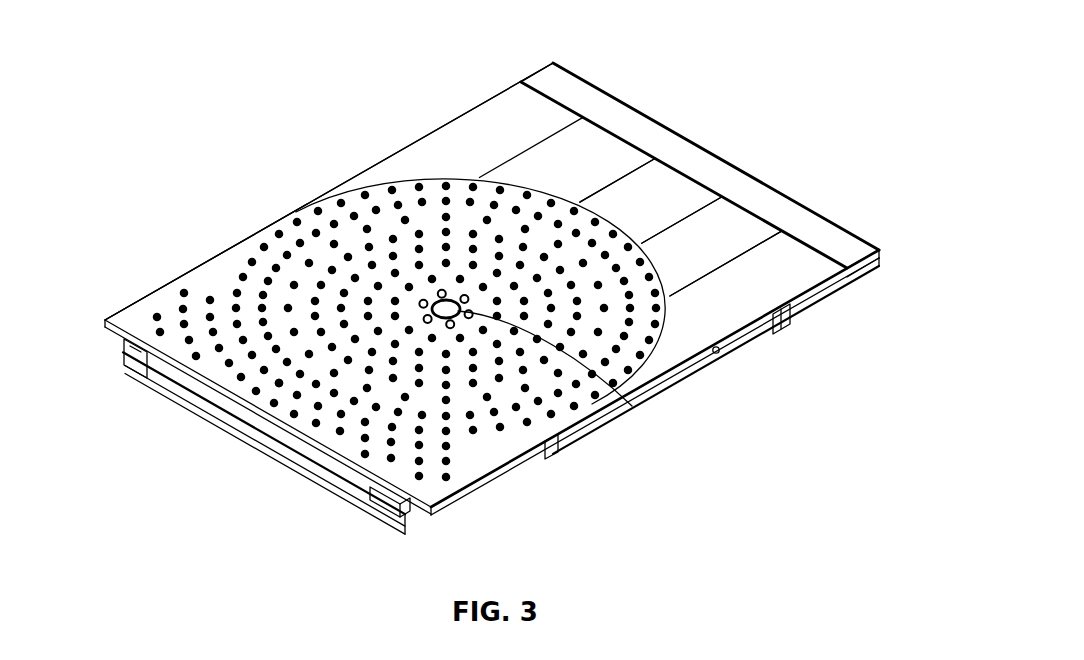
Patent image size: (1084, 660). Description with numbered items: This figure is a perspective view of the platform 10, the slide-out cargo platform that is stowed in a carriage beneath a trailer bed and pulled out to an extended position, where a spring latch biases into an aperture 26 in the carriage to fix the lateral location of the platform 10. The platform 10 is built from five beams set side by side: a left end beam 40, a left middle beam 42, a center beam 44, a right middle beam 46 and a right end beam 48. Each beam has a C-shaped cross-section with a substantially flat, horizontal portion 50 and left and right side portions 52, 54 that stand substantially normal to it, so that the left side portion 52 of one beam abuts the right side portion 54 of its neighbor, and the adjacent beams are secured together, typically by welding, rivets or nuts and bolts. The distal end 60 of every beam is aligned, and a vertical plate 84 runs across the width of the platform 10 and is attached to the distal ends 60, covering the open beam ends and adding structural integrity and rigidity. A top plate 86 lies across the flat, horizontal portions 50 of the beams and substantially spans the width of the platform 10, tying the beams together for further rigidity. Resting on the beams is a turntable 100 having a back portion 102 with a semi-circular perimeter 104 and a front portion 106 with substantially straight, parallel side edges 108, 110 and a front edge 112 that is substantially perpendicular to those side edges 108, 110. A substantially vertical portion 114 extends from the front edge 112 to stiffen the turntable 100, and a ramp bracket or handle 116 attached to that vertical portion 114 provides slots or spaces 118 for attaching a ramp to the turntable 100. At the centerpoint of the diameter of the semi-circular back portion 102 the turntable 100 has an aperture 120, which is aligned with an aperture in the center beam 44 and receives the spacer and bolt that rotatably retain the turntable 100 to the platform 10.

The platform 10 is at (880, 173).
The aperture 26 is at (745, 358).
The left end beam 40 is at (507, 107).
The left middle beam 42 is at (590, 153).
The center beam 44 is at (643, 192).
The right middle beam 46 is at (683, 220).
The right end beam 48 is at (867, 274).
The substantially flat, horizontal portion 50 is at (723, 350).
The left side portion 52 is at (440, 127).
The right side portion 54 is at (789, 316).
The distal end 60 is at (843, 221).
The vertical plate 84 is at (583, 98).
The top plate 86 is at (843, 247).
The turntable 100 is at (480, 468).
The back portion 102 is at (330, 220).
The semi-circular perimeter 104 is at (587, 427).
The front portion 106 is at (275, 388).
The side edge 108 is at (193, 273).
The side edge 110 is at (527, 453).
The front edge 112 is at (108, 340).
The substantially vertical portion 114 is at (400, 500).
The ramp bracket or handle 116 is at (173, 385).
The slots or spaces 118 is at (283, 460).
The aperture 120 is at (636, 405).